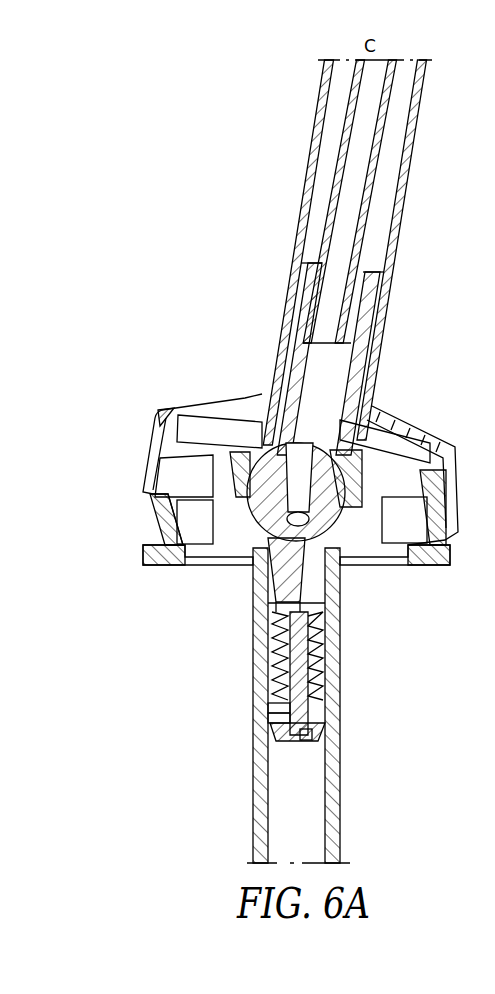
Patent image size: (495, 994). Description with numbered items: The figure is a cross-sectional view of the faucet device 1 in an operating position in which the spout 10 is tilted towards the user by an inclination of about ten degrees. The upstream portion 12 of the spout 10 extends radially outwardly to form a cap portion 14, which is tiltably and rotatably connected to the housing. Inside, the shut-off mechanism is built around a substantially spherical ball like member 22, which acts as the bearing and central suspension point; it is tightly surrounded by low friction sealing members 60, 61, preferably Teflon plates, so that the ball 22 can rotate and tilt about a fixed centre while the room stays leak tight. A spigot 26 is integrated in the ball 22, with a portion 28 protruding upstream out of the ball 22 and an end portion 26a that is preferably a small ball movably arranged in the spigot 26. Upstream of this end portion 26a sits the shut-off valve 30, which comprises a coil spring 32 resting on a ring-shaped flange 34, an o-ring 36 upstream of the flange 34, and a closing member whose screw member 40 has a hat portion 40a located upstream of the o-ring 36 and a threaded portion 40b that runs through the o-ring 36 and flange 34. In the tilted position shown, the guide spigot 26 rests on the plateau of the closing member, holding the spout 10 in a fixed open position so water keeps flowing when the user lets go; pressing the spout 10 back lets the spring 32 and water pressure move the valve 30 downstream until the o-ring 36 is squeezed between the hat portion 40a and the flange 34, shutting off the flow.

The faucet device 1 is at (200, 712).
The spout 10 is at (386, 300).
The upstream portion of the spout 12 is at (373, 395).
The cap portion 14 is at (165, 437).
The ball like member 22 is at (365, 512).
The spigot 26 is at (312, 571).
The end portion of the spigot 26a is at (276, 592).
The portion of the spigot 28 is at (275, 577).
The shut-off valve 30 is at (323, 676).
The coil spring 32 is at (278, 662).
The flange 34 is at (275, 694).
The o-ring 36 is at (276, 712).
The screw member 40 is at (276, 736).
The hat portion 40a is at (307, 741).
The threaded portion 40b is at (321, 634).
The sealing member 60 is at (247, 447).
The sealing member 61 is at (250, 527).